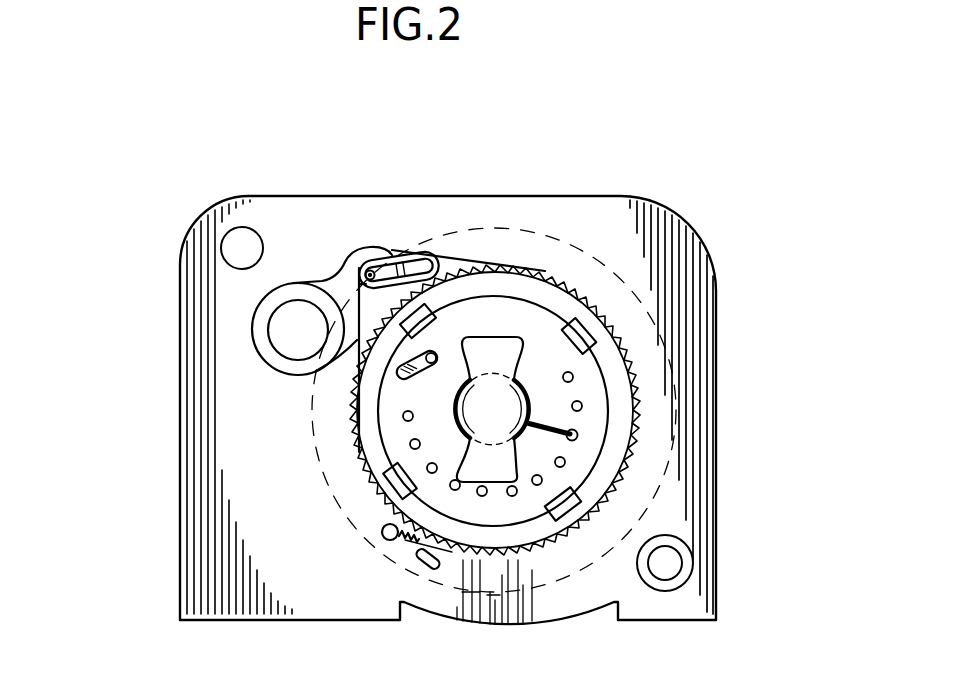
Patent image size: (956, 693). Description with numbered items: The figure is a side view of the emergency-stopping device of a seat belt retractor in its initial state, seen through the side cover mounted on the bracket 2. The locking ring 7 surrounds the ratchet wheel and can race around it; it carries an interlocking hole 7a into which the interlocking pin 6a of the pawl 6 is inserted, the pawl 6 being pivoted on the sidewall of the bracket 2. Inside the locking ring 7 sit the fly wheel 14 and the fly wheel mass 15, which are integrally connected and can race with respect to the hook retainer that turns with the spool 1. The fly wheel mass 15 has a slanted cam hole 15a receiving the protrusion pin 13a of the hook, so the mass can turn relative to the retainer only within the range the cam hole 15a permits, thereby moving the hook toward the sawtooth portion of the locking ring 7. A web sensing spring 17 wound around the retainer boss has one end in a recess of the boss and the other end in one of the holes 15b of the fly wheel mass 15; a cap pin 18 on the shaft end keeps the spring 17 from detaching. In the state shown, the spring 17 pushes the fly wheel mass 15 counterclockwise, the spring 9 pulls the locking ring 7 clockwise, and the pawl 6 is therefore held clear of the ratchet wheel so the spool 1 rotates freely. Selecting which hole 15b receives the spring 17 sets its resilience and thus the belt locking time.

The spool 1 is at (718, 492).
The bracket 2 is at (180, 412).
The pawl 6 is at (294, 283).
The interlocking pin 6a is at (368, 271).
The locking ring 7 is at (448, 250).
The interlocking hole 7a is at (412, 262).
The spring 9 is at (398, 544).
The protrusion pin 13a is at (436, 363).
The fly wheel 14 is at (636, 413).
The fly wheel mass 15 is at (493, 300).
The cam hole 15a is at (405, 375).
The holes 15b is at (512, 497).
The web sensing spring 17 is at (550, 422).
The cap pin 18 is at (528, 342).